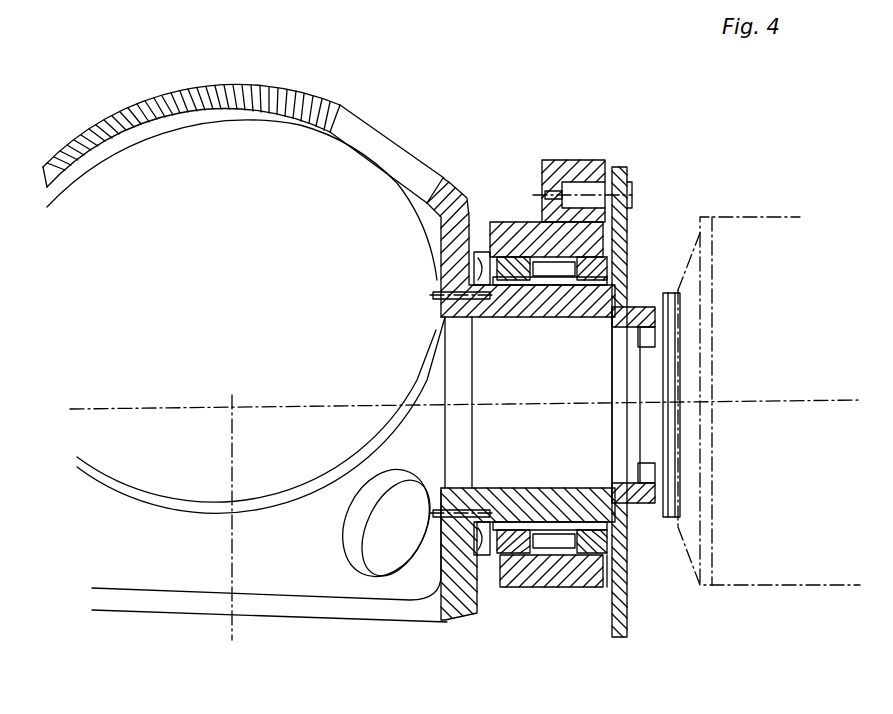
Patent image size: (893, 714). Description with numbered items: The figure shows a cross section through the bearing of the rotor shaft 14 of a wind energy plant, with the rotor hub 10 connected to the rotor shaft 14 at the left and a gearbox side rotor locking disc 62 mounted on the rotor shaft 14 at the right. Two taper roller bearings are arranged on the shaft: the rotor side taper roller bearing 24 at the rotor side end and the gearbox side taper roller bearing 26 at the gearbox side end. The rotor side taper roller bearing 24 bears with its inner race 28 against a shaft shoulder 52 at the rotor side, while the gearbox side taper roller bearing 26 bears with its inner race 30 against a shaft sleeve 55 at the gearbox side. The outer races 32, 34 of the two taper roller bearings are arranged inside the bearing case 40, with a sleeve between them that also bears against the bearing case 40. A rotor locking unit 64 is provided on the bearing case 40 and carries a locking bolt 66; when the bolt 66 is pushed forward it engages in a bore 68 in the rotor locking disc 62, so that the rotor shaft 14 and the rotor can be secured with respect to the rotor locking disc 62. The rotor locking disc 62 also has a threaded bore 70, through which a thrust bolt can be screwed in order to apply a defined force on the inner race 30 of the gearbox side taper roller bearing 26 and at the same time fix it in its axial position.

The rotor hub 10 is at (330, 113).
The rotor shaft 14 is at (445, 623).
The rotor side taper roller bearing 24 is at (502, 587).
The gearbox side taper roller bearing 26 is at (597, 587).
The inner race 28 is at (492, 587).
The inner race 30 is at (613, 587).
The outer race 32 is at (520, 587).
The outer race 34 is at (580, 587).
The bearing case 40 is at (517, 222).
The shaft shoulder 52 is at (471, 200).
The shaft sleeve 55 is at (608, 265).
The rotor locking disc 62 is at (622, 168).
The rotor locking unit 64 is at (555, 168).
The locking bolt 66 is at (580, 187).
The bore 68 is at (623, 187).
The threaded bore 70 is at (655, 520).